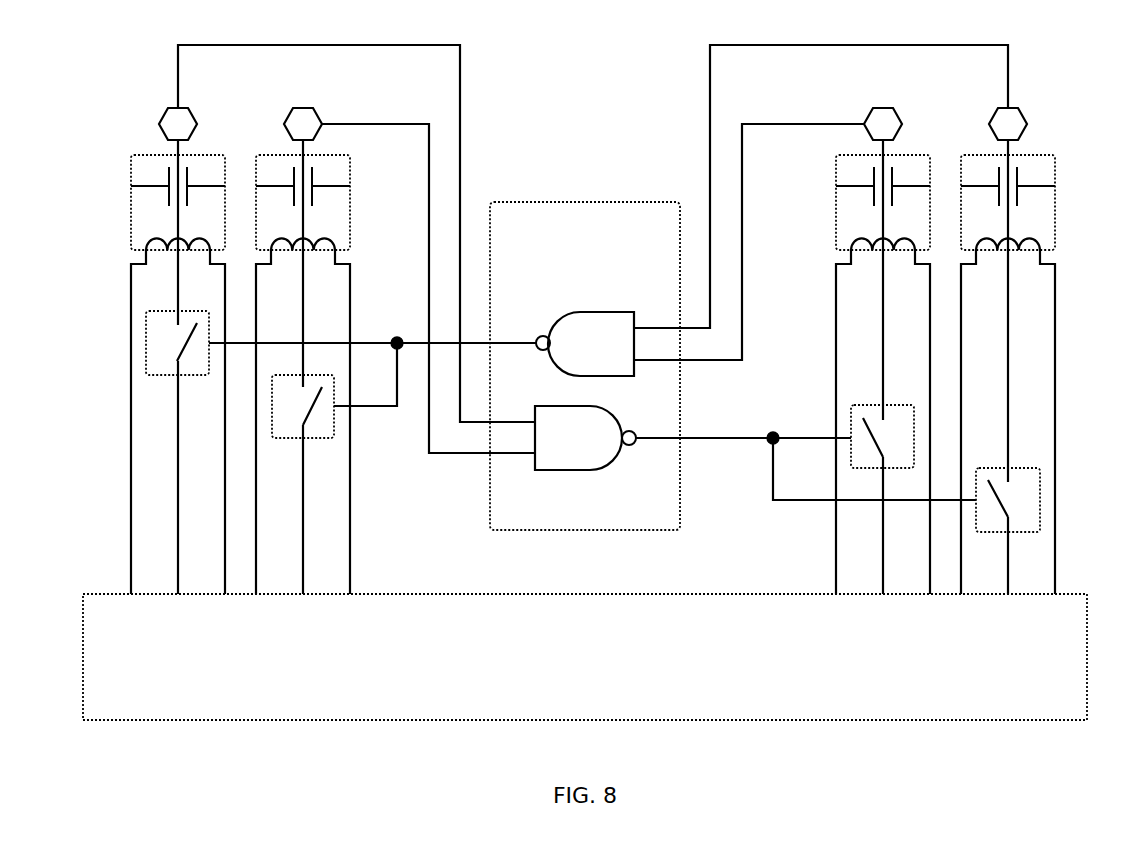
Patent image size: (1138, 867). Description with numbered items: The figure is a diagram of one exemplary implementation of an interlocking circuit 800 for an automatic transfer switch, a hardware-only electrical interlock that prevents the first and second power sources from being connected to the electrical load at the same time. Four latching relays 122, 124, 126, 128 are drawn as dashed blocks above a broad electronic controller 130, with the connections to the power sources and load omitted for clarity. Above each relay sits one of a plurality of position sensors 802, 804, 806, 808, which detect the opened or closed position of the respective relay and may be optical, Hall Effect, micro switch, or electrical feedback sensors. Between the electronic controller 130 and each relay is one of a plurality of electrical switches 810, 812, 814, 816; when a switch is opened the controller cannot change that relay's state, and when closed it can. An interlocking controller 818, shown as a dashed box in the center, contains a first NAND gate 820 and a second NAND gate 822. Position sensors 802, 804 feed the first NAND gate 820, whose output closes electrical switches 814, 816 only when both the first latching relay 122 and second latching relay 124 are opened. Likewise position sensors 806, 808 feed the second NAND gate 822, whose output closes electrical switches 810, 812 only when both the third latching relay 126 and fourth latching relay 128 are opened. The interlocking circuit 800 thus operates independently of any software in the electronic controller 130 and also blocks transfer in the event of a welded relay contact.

The interlocking circuit 800 is at (590, 100).
The position sensor 802 is at (163, 113).
The position sensor 804 is at (283, 113).
The position sensor 806 is at (899, 114).
The position sensor 808 is at (1022, 113).
The first latching relay 122 is at (160, 155).
The second latching relay 124 is at (285, 155).
The third latching relay 126 is at (897, 155).
The fourth latching relay 128 is at (1022, 155).
The electrical switch 810 is at (146, 325).
The electrical switch 812 is at (334, 430).
The electrical switch 814 is at (851, 408).
The electrical switch 816 is at (1040, 522).
The interlocking controller 818 is at (585, 202).
The first NAND gate 820 is at (578, 470).
The second NAND gate 822 is at (592, 312).
The electronic controller 130 is at (992, 720).